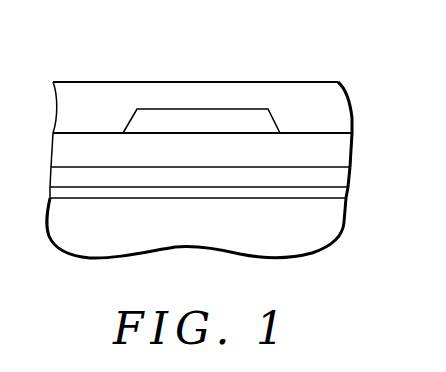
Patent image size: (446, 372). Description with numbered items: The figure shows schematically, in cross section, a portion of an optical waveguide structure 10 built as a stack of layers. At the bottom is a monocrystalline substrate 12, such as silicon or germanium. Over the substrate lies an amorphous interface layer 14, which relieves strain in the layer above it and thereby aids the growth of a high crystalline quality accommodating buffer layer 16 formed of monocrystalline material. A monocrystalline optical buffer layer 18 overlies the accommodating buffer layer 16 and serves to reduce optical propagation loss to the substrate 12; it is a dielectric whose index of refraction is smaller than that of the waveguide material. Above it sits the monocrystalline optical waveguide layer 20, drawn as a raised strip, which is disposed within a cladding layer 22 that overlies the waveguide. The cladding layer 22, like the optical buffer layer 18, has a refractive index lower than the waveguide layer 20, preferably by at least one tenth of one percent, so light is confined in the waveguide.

The optical waveguide structure 10 is at (239, 74).
The monocrystalline substrate 12 is at (322, 238).
The amorphous interface layer 14 is at (339, 195).
The accommodating buffer layer 16 is at (337, 180).
The monocrystalline optical buffer layer 18 is at (333, 152).
The monocrystalline optical waveguide layer 20 is at (155, 114).
The cladding layer 22 is at (340, 112).